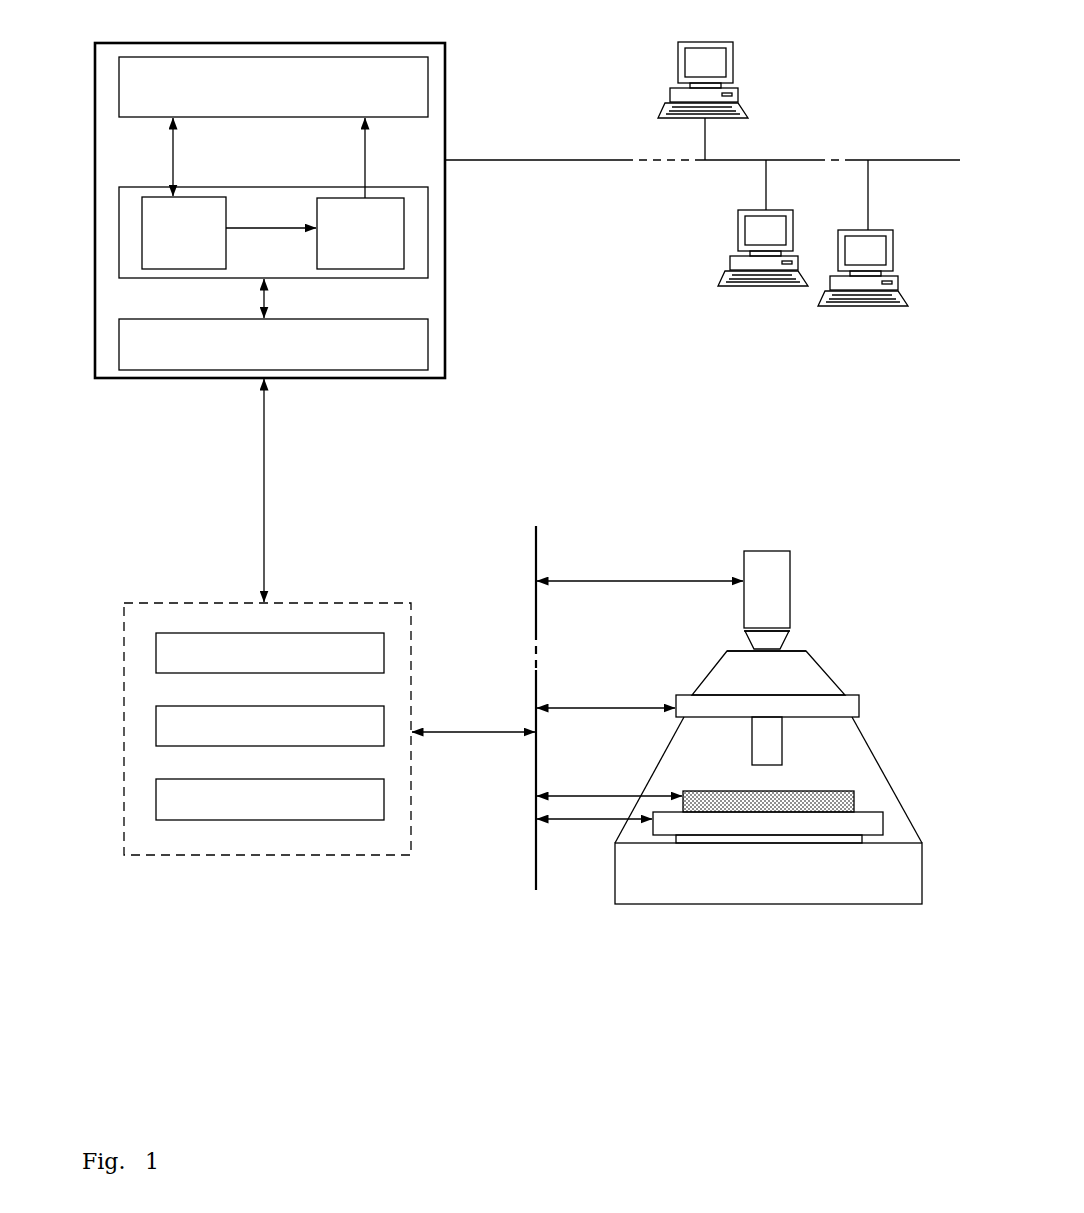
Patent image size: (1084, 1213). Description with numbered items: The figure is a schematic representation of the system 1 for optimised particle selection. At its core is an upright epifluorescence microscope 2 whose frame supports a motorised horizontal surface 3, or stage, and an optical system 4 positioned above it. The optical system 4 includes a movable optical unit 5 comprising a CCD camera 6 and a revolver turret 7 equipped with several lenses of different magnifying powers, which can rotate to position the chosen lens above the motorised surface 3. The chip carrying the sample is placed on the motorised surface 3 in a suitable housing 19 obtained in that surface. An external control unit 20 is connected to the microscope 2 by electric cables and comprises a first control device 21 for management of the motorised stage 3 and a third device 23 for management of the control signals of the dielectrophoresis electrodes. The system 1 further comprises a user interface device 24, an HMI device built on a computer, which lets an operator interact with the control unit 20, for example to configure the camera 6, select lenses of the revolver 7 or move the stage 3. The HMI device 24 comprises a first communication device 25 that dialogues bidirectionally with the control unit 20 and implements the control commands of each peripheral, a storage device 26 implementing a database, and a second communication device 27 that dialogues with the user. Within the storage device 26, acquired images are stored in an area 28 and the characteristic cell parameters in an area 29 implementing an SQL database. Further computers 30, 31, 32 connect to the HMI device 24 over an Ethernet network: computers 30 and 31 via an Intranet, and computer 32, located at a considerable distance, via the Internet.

The system for optimised particle selection 1 is at (823, 504).
The upright epifluorescence microscope 2 is at (846, 610).
The motorised horizontal surface 3 is at (889, 821).
The optical system 4 is at (858, 651).
The movable optical unit 5 is at (833, 678).
The CCD camera 6 is at (769, 548).
The revolver turret 7 is at (862, 710).
The housing 19 is at (764, 790).
The external control unit 20 is at (263, 859).
The first control device 21 is at (153, 650).
The third device 23 is at (153, 725).
The user interface device 24 is at (268, 41).
The first communication device 25 is at (116, 345).
The storage device 26 is at (116, 233).
The second communication device 27 is at (116, 85).
The image storage area 28 is at (407, 239).
The cell database area 29 is at (225, 163).
The computer 30 is at (668, 97).
The computer 31 is at (734, 250).
The computer 32 is at (867, 308).